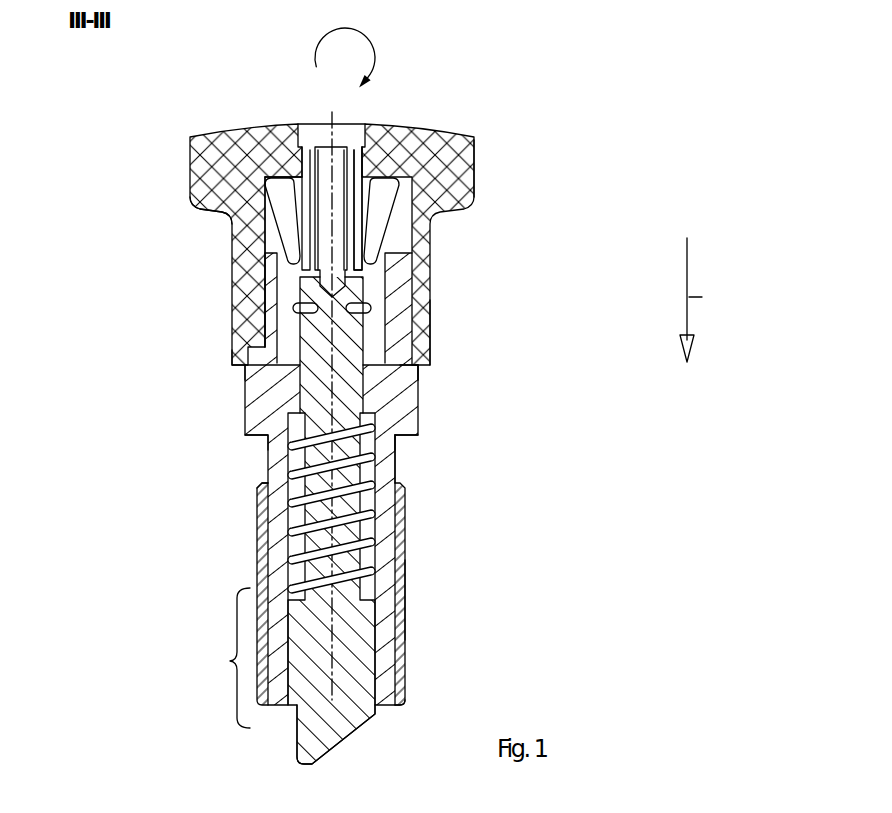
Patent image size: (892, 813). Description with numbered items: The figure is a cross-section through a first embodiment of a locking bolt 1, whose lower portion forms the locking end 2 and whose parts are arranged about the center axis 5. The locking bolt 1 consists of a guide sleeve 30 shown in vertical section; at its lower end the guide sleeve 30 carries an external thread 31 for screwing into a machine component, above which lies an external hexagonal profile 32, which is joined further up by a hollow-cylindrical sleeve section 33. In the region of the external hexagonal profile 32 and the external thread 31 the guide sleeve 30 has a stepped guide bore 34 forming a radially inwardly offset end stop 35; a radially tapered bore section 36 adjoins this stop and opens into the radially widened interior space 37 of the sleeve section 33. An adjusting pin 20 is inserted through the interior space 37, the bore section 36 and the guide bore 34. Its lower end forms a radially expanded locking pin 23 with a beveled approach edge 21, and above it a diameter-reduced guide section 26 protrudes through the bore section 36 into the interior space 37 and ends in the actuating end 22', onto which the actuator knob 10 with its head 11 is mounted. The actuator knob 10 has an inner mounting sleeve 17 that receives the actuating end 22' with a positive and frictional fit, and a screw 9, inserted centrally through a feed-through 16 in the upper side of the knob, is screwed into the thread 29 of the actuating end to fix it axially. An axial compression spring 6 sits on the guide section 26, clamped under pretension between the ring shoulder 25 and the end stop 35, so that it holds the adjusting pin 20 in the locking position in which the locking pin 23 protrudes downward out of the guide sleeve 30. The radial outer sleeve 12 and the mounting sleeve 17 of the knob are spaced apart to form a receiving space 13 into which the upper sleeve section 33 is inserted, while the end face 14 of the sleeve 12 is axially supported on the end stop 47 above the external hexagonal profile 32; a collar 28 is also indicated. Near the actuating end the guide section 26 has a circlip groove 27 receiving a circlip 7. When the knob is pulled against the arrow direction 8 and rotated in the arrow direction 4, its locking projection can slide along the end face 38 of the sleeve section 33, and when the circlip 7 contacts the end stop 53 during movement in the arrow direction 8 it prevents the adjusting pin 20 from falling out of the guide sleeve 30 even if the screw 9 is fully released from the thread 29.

The locking bolt 1 is at (512, 115).
The locking end 2 is at (228, 658).
The arrow direction 4 is at (358, 35).
The center axis 5 is at (338, 112).
The axial compression spring 6 is at (405, 500).
The circlip 7 is at (366, 307).
The arrow direction 8 is at (702, 300).
The screw 9 is at (362, 122).
The actuator knob 10 is at (474, 158).
The head 11 is at (198, 182).
The sleeve 12 is at (425, 330).
The receiving space 13 is at (397, 214).
The end face 14 is at (420, 372).
The feed-through 16 is at (433, 132).
The mounting sleeve 17 is at (292, 263).
The adjusting pin 20 is at (412, 405).
The beveled approach edge 21 is at (336, 746).
The actuating end 22' is at (484, 208).
The locking pin 23 is at (355, 642).
The ring shoulder 25 is at (406, 600).
The guide section 26 is at (288, 508).
The circlip groove 27 is at (247, 393).
The collar 28 is at (296, 310).
The thread 29 is at (292, 242).
The guide sleeve 30 is at (406, 667).
The external thread 31 is at (406, 686).
The external hexagonal profile 32 is at (248, 425).
The sleeve section 33 is at (422, 342).
The guide bore 34 is at (398, 457).
The end stop 35 is at (262, 468).
The bore section 36 is at (400, 383).
The interior space 37 is at (388, 311).
The end face 38 is at (266, 238).
The end stop 47 is at (248, 368).
The end stop 53 is at (421, 362).